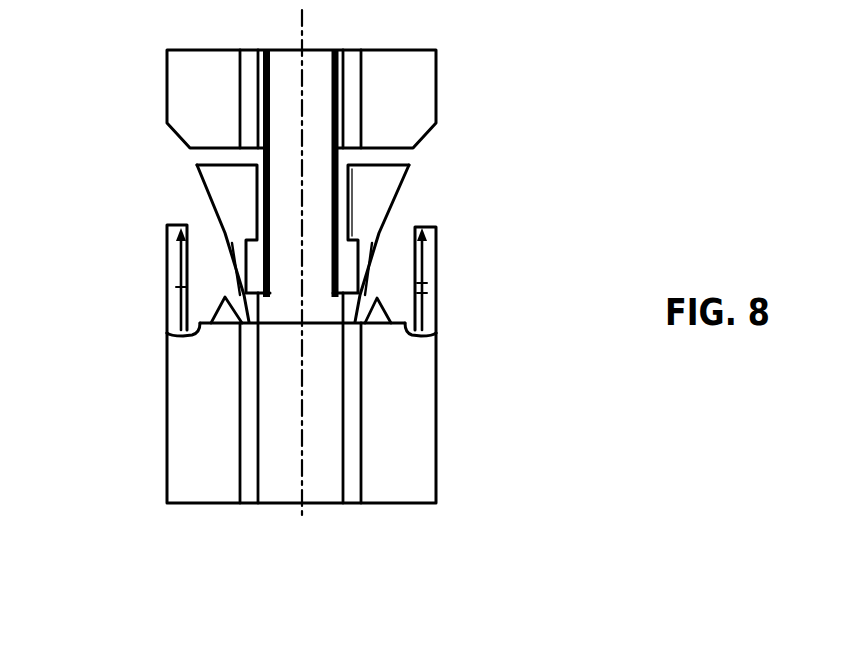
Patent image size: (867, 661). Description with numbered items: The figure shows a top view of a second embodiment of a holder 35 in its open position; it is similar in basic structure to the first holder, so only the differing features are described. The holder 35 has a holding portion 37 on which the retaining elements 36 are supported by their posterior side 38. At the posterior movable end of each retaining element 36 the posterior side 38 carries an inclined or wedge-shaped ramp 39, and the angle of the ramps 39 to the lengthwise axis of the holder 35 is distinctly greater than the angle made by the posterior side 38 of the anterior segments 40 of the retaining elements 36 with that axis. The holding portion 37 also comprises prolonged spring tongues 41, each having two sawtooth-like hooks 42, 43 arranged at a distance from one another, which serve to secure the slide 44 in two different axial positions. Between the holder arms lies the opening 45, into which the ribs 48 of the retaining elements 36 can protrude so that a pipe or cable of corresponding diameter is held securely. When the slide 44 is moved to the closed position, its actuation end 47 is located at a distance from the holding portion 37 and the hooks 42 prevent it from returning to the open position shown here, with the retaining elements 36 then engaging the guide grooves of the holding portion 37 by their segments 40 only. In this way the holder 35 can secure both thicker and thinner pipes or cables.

The holder 35 is at (145, 444).
The retaining element 36 is at (409, 201).
The holding portion 37 is at (168, 483).
The posterior side 38 is at (222, 232).
The ramp 39 is at (197, 180).
The anterior segment 40 is at (225, 253).
The spring tongue 41 is at (436, 317).
The hook 42 is at (436, 233).
The hook 43 is at (433, 292).
The slide 44 is at (436, 78).
The opening 45 is at (278, 468).
The actuation end 47 is at (178, 87).
The rib 48 is at (358, 180).